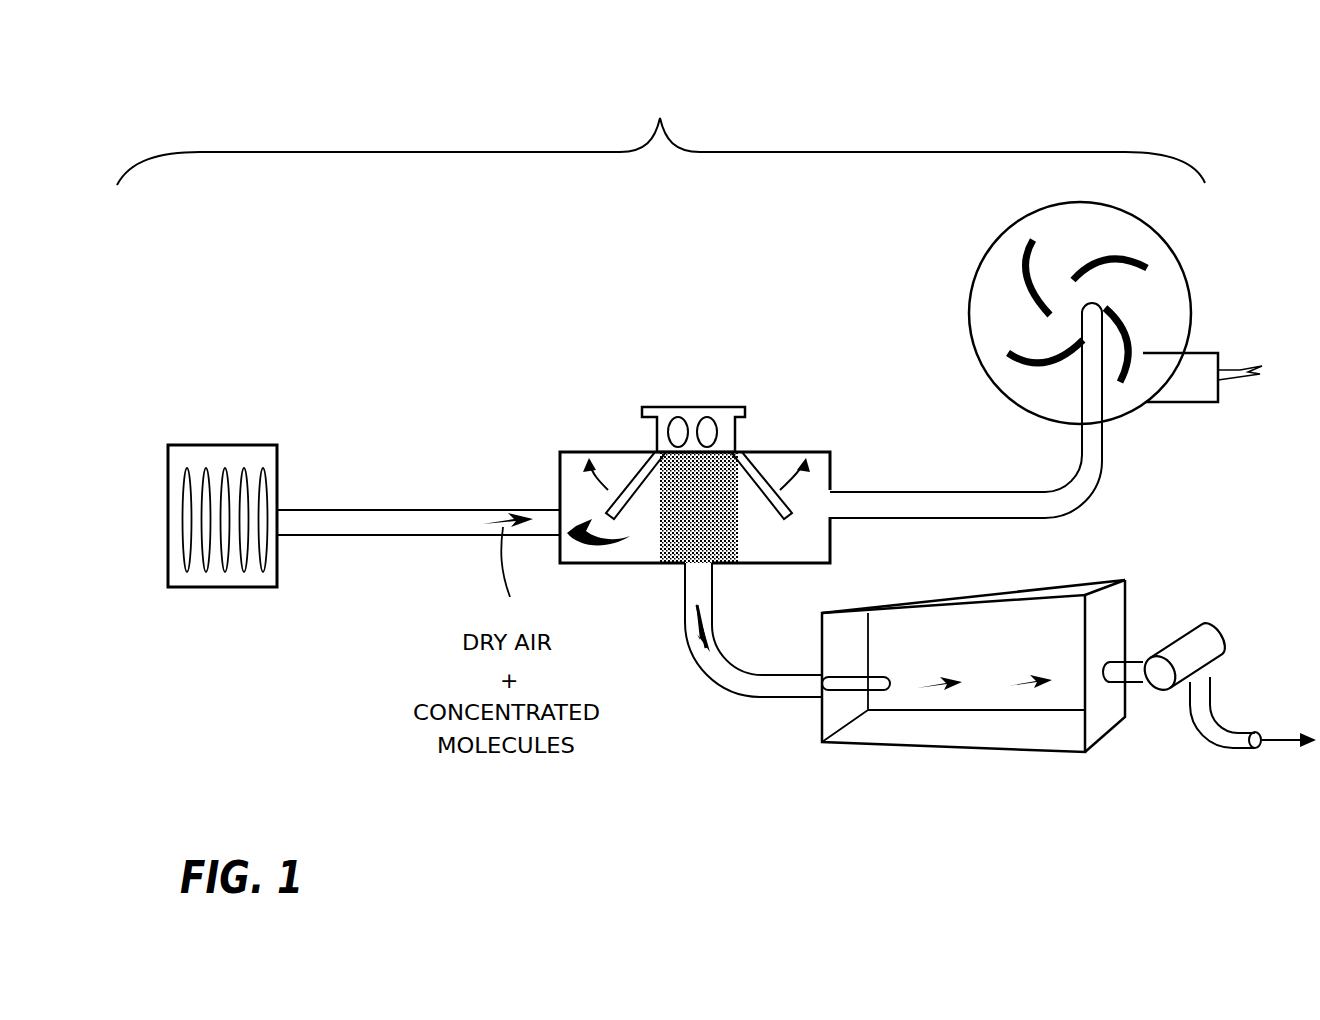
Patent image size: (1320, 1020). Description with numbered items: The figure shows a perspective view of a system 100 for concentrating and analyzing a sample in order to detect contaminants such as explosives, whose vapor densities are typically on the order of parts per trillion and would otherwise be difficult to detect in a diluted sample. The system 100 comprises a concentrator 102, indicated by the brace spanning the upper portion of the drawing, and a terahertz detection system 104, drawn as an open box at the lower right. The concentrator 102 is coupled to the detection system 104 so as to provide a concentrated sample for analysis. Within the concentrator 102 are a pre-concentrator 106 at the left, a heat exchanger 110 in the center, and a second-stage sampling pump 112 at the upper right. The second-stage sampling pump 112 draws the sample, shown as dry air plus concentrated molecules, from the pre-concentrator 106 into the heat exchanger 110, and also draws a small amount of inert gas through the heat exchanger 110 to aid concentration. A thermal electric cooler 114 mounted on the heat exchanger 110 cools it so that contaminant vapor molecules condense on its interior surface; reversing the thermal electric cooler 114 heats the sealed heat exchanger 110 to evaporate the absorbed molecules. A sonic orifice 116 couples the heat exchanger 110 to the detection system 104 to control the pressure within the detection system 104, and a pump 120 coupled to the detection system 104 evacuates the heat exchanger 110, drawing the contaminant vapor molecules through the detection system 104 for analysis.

The system 100 is at (178, 87).
The concentrator 102 is at (661, 134).
The terahertz detection system 104 is at (935, 730).
The pre-concentrator 106 is at (217, 445).
The heat exchanger 110 is at (598, 452).
The second-stage sampling pump 112 is at (980, 268).
The thermal electric cooler 114 is at (725, 432).
The sonic orifice 116 is at (715, 668).
The pump 120 is at (1215, 642).